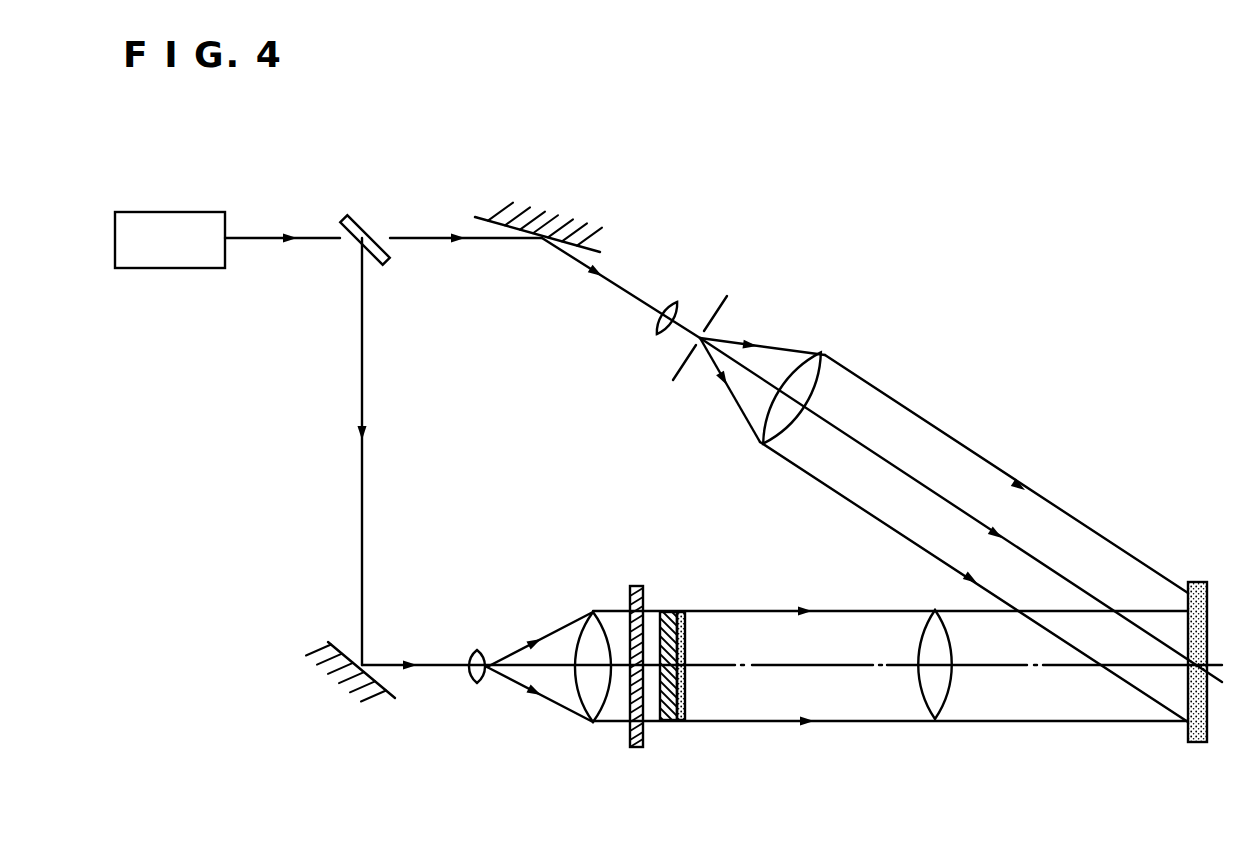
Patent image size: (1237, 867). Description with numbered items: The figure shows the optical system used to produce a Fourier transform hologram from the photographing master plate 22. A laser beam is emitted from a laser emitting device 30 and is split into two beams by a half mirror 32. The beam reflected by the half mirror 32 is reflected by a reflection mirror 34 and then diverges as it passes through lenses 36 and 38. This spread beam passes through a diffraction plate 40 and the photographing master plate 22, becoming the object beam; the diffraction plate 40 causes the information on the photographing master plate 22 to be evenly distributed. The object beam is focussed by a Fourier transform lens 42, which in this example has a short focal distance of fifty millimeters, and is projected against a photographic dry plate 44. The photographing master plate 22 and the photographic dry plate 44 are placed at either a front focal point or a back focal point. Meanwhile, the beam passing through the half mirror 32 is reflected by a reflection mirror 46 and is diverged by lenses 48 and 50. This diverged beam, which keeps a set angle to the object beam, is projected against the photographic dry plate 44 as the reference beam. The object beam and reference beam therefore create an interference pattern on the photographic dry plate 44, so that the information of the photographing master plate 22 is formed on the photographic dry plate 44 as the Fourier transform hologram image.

The laser emitting device 30 is at (192, 268).
The half mirror 32 is at (348, 222).
The reflection mirror 34 is at (332, 677).
The lens 36 is at (474, 683).
The lens 38 is at (593, 706).
The diffraction plate 40 is at (638, 748).
The photographing master plate 22 is at (668, 716).
The Fourier transform lens 42 is at (930, 720).
The photographic dry plate 44 is at (1196, 742).
The reflection mirror 46 is at (576, 225).
The lens 48 is at (668, 316).
The lens 50 is at (815, 370).